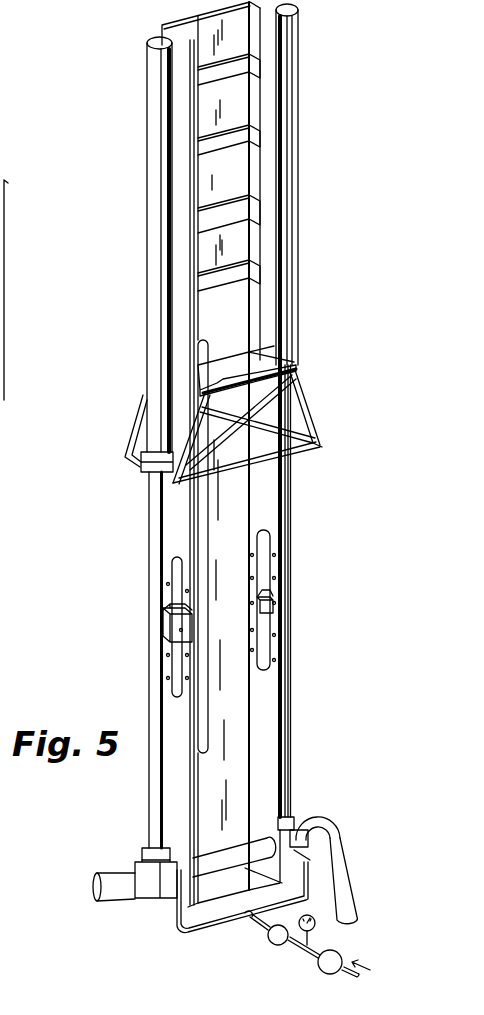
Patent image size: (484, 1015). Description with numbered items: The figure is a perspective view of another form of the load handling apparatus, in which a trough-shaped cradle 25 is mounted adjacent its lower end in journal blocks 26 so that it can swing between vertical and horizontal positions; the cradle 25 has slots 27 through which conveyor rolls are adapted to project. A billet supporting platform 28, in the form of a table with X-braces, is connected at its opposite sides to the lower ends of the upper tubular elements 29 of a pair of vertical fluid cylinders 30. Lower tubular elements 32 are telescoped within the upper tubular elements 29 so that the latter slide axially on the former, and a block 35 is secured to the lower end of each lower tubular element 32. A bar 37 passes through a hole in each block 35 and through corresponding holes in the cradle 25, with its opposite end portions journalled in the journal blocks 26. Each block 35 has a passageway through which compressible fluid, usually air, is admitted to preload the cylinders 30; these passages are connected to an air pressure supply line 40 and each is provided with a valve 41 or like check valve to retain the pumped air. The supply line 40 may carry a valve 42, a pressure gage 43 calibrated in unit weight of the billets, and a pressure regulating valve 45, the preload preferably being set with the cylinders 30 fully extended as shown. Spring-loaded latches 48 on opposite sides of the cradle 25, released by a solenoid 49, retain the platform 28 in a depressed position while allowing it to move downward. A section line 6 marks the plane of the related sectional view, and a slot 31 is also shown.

The section line 6- 6 is at (140, 33).
The trough-shaped cradle 25 is at (267, 490).
The journal blocks 26 is at (323, 815).
The slots 27 is at (250, 137).
The billet supporting platform 28 is at (248, 365).
The upper tubular elements 29 is at (290, 207).
The vertical fluid cylinders 30 is at (141, 502).
The slot 31 is at (285, 642).
The lower tubular elements 32 is at (157, 678).
The block 35 is at (160, 912).
The bar 37 is at (120, 887).
The air pressure supply line 40 is at (350, 977).
The valve 41 is at (320, 827).
The valve 42 is at (268, 942).
The pressure gage 43 is at (315, 925).
The pressure regulating valve 45 is at (343, 955).
The spring-loaded latches 48 is at (163, 610).
The solenoid 49 is at (167, 632).